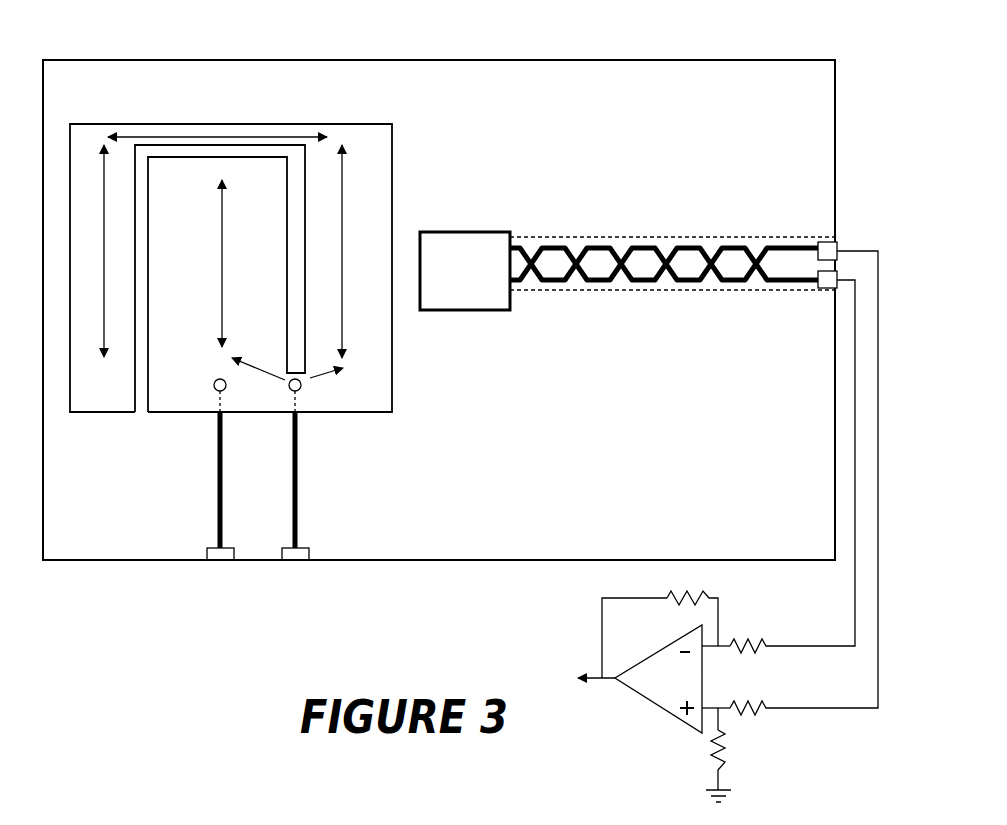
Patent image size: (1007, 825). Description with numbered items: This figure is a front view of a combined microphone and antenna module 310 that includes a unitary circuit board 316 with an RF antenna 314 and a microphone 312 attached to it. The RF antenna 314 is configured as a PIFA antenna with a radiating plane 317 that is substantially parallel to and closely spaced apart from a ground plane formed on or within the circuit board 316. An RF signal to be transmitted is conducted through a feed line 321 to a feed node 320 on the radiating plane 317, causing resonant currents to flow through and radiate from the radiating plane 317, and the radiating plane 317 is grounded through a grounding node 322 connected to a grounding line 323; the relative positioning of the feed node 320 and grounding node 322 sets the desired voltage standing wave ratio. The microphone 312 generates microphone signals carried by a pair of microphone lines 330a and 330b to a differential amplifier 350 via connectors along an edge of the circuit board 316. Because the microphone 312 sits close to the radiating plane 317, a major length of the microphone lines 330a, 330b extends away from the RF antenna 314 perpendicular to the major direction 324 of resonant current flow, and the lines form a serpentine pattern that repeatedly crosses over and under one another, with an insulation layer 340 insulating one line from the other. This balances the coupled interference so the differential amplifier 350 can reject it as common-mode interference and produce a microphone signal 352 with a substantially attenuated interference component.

The combined microphone and antenna module 310 is at (446, 42).
The unitary circuit board 316 is at (620, 60).
The radiating plane 317 is at (393, 157).
The RF antenna 314 is at (251, 108).
The major direction of resonant current flow 324 is at (343, 320).
The grounding node 322 is at (215, 390).
The feed node 320 is at (301, 388).
The grounding line 323 is at (219, 520).
The feed line 321 is at (296, 520).
The microphone 312 is at (462, 232).
The insulation layer 340 is at (717, 237).
The microphone line 330a is at (602, 247).
The microphone line 330b is at (600, 285).
The differential amplifier 350 is at (668, 713).
The microphone signal 352 is at (590, 676).